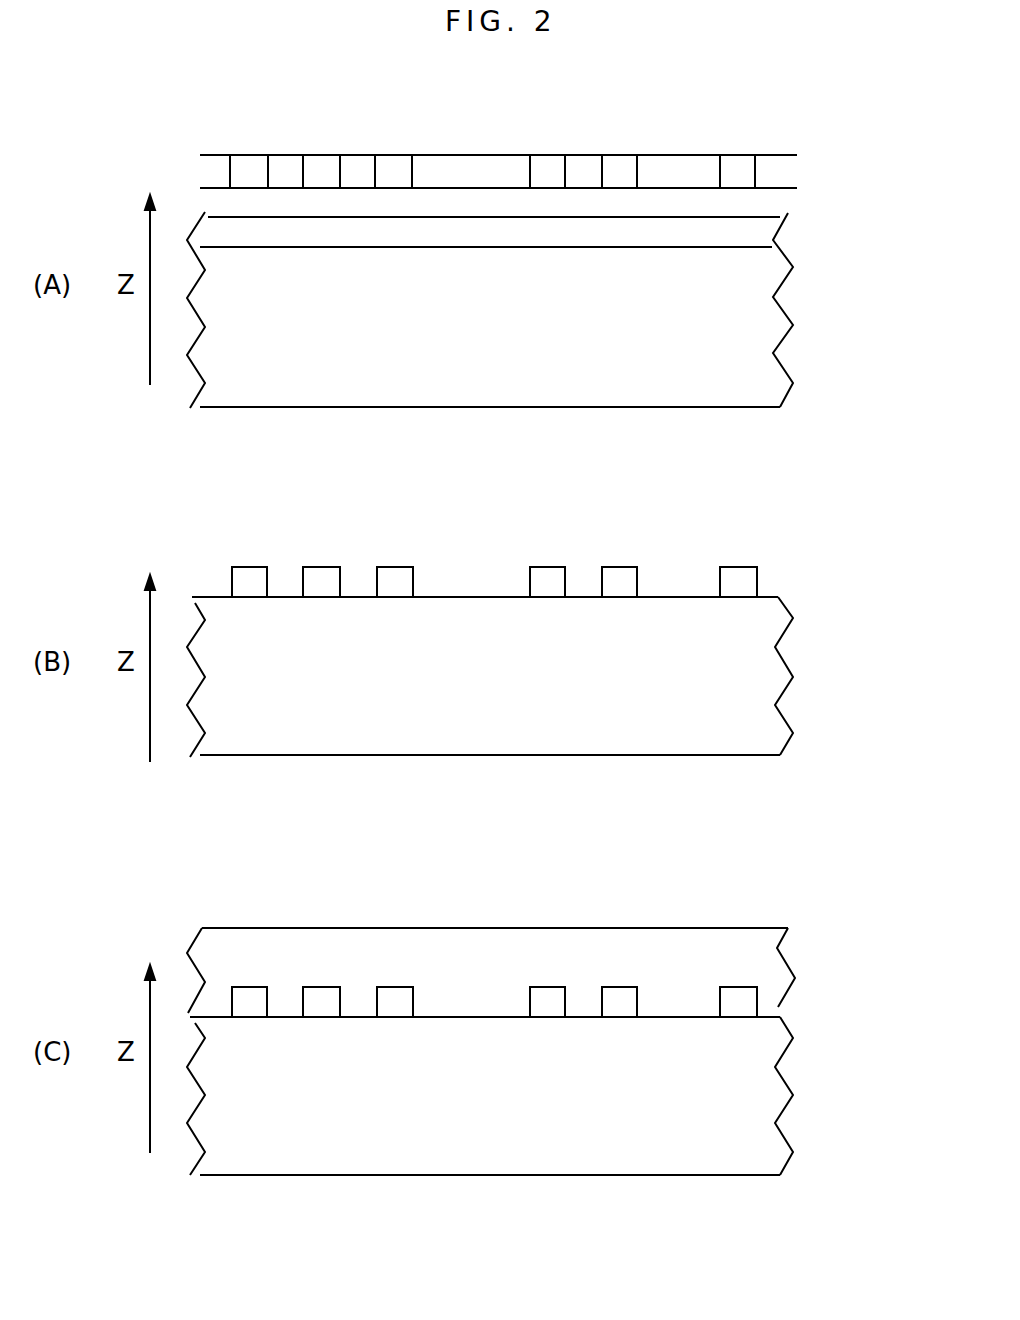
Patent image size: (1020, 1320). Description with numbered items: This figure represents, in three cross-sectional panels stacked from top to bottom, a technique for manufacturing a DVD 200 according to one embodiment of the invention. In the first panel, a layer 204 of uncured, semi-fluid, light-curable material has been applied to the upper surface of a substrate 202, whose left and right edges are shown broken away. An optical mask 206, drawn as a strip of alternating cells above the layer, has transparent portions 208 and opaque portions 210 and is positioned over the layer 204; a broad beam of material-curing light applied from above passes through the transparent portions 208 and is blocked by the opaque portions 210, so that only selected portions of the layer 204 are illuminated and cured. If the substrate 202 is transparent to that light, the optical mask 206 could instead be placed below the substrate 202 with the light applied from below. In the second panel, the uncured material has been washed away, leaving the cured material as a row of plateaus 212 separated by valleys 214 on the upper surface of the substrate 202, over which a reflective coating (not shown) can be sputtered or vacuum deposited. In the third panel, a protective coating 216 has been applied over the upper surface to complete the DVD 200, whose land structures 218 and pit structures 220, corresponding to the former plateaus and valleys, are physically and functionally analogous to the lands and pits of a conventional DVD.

The DVD 200 is at (833, 898).
The substrate 202 is at (800, 333).
The layer of uncured light-curable material 204 is at (800, 232).
The optical mask 206 is at (812, 172).
The transparent portions 208 is at (547, 155).
The opaque portions 210 is at (357, 155).
The plateaus 212 is at (395, 565).
The valleys 214 is at (467, 594).
The protective coating 216 is at (800, 957).
The land structures 218 is at (396, 1022).
The pit structures 220 is at (468, 1022).